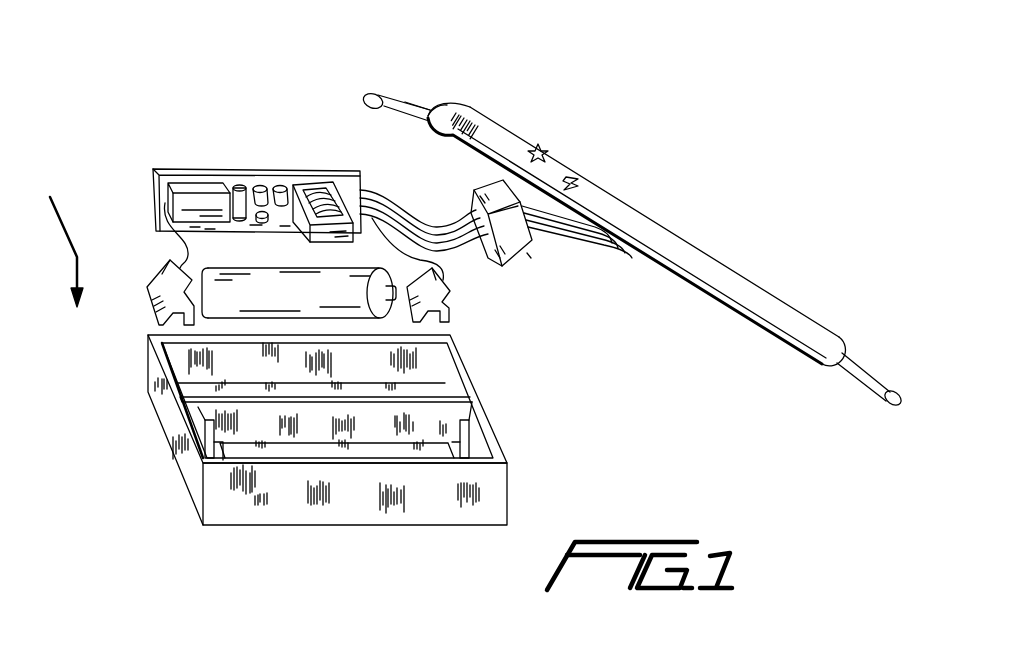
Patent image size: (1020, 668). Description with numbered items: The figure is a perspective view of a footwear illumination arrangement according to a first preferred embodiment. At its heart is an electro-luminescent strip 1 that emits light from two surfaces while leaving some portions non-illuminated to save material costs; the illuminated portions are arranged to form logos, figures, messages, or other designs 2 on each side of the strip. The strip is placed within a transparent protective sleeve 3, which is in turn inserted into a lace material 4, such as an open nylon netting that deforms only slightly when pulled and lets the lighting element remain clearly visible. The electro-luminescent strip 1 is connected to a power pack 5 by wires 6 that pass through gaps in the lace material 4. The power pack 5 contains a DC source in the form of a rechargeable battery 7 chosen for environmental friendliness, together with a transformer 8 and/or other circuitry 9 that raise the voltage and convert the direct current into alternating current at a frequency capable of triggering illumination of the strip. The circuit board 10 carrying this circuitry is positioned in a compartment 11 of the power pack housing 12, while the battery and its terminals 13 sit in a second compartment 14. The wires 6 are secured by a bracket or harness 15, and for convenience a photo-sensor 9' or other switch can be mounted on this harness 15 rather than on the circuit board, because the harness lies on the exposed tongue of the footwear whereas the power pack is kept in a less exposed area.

The electro-luminescent strip 1 is at (590, 178).
The designs 2 is at (764, 298).
The transparent protective sleeve 3 is at (467, 110).
The lace material 4 is at (440, 107).
The power pack 5 is at (531, 399).
The wires 6 is at (563, 240).
The rechargeable battery 7 is at (395, 305).
The transformer 8 is at (330, 185).
The circuitry 9 is at (229, 163).
The photo-sensor 9' is at (566, 296).
The circuit board 10 is at (153, 188).
The compartment 11 is at (430, 385).
The power pack housing 12 is at (485, 488).
The terminals 13 is at (157, 283).
The second compartment 14 is at (275, 455).
The bracket or harness 15 is at (472, 194).